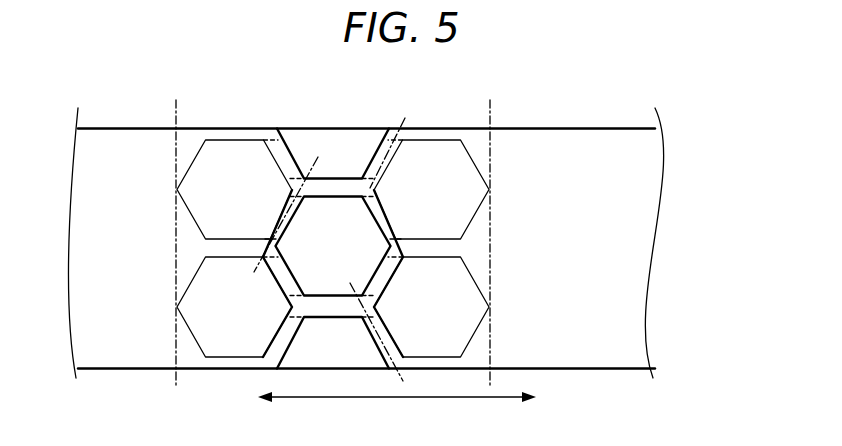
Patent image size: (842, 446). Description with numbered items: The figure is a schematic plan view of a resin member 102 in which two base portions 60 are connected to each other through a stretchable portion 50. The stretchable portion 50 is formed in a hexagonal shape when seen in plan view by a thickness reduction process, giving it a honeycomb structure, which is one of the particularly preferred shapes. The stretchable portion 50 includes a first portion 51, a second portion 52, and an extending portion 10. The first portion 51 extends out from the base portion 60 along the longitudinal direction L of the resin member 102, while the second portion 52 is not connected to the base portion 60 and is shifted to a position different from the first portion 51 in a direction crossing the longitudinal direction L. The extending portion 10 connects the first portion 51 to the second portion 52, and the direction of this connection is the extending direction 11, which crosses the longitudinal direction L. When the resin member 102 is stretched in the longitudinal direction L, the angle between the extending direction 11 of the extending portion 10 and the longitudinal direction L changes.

The extending portion 10 is at (285, 161).
The extending direction 11 is at (356, 201).
The stretchable portion 50 is at (489, 112).
The first portion 51 is at (448, 248).
The second portion 52 is at (332, 190).
The base portion 60 is at (121, 150).
The resin member 102 is at (696, 161).
The longitudinal direction L is at (542, 396).